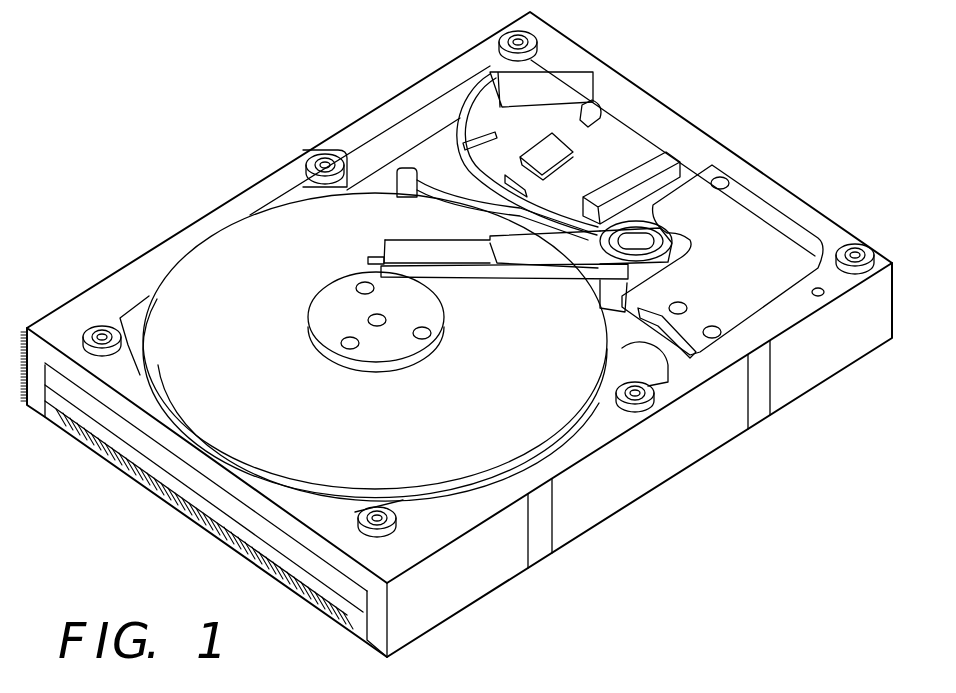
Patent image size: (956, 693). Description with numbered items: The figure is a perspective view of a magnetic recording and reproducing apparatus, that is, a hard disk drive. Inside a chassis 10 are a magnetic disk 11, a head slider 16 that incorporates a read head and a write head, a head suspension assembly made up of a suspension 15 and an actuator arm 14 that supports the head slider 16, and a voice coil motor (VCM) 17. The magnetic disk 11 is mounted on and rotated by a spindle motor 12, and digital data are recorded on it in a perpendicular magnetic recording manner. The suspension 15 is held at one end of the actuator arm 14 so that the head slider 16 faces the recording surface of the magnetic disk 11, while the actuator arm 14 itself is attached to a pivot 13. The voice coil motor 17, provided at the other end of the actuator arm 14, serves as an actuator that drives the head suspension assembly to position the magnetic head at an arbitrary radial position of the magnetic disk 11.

The chassis 10 is at (63, 327).
The magnetic disk 11 is at (233, 252).
The spindle motor 12 is at (323, 332).
The pivot 13 is at (633, 240).
The actuator arm 14 is at (517, 252).
The suspension 15 is at (463, 283).
The head slider 16 is at (412, 277).
The voice coil motor (VCM) 17 is at (785, 247).